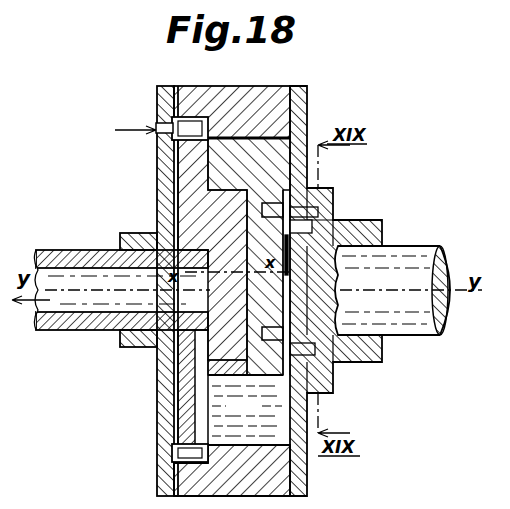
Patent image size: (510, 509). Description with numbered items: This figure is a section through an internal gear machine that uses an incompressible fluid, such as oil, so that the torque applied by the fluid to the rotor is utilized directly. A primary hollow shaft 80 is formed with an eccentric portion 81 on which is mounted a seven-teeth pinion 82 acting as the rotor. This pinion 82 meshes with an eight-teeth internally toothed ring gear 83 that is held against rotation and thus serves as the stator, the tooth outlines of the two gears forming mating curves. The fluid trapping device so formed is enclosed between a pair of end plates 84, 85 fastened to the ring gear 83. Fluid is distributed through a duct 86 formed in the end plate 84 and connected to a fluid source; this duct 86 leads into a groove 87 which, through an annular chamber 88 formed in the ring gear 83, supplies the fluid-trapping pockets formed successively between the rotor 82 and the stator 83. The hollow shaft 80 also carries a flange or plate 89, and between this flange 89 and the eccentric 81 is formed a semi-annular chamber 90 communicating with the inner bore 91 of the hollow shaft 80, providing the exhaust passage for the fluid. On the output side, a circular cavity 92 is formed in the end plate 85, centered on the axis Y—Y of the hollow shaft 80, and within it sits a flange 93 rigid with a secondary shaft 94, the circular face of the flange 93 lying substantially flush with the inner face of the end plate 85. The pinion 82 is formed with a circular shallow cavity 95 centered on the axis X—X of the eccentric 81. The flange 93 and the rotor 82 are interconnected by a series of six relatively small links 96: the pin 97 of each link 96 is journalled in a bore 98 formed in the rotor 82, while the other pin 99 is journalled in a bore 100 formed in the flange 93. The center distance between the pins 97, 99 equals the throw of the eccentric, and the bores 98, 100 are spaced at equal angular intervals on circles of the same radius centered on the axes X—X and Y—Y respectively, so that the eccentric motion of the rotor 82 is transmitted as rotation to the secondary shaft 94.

The primary hollow shaft 80 is at (58, 258).
The eccentric portion 81 is at (231, 345).
The pinion 82 is at (307, 135).
The ring gear 83 is at (267, 100).
The end plate 84 is at (165, 192).
The end plate 85 is at (303, 484).
The duct 86 is at (158, 125).
The groove 87 is at (178, 115).
The annular chamber 88 is at (215, 102).
The flange or plate 89 is at (186, 378).
The semi-annular chamber 90 is at (200, 412).
The inner bore 91 is at (72, 307).
The circular cavity 92 is at (335, 203).
The flange 93 is at (332, 382).
The secondary shaft 94 is at (418, 256).
The circular shallow cavity 95 is at (333, 190).
The link 96 is at (336, 262).
The pin 97 is at (285, 200).
The bore 98 is at (260, 212).
The pin 99 is at (330, 219).
The bore 100 is at (382, 233).